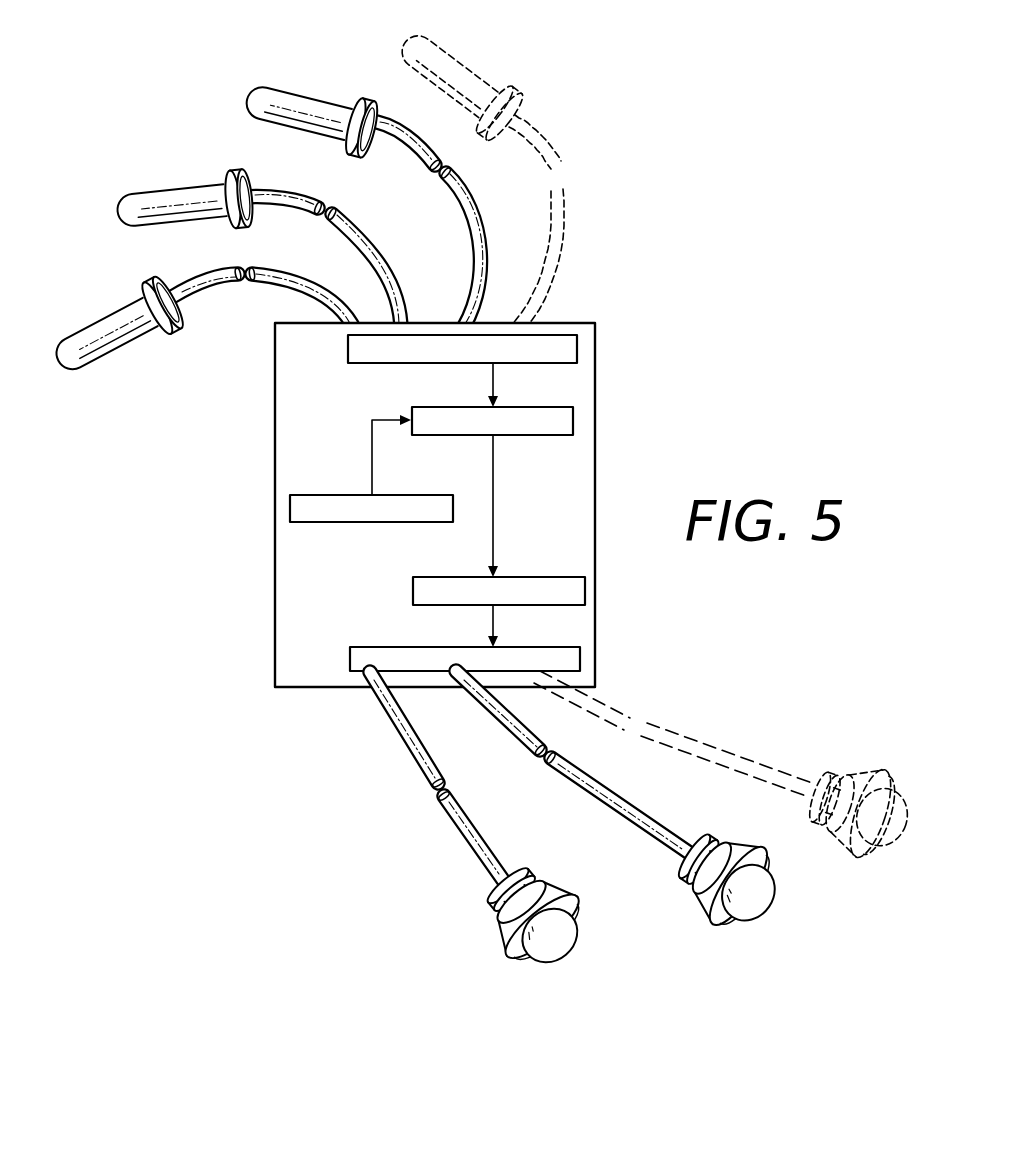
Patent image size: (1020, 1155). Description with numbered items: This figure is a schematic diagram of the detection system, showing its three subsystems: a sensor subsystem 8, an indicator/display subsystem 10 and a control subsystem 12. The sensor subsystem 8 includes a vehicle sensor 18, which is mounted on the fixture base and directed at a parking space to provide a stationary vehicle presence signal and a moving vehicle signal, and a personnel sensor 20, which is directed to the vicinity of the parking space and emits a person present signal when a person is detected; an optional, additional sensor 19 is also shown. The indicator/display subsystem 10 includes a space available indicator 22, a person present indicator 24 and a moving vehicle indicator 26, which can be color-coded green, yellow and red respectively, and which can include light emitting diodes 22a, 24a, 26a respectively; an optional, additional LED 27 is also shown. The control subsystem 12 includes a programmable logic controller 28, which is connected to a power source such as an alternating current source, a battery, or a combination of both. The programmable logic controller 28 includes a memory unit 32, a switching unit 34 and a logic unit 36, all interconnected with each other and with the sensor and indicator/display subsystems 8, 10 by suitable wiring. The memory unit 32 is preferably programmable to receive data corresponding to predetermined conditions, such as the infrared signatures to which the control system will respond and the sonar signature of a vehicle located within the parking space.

The sensor subsystem 8 is at (466, 939).
The indicator/display subsystem 10 is at (174, 112).
The control subsystem 12 is at (596, 323).
The vehicle sensor 18 is at (530, 963).
The additional sensor 19 is at (890, 772).
The personnel sensor 20 is at (725, 926).
The space available indicator 22 is at (72, 376).
The light emitting diode 22a is at (97, 328).
The person present indicator 24 is at (118, 222).
The light emitting diode 24a is at (158, 187).
The moving vehicle indicator 26 is at (252, 114).
The light emitting diode 26a is at (300, 89).
The additional LED 27 is at (420, 42).
The programmable logic controller 28 is at (275, 688).
The memory unit 32 is at (305, 523).
The switching unit 34 is at (415, 577).
The logic unit 36 is at (571, 436).